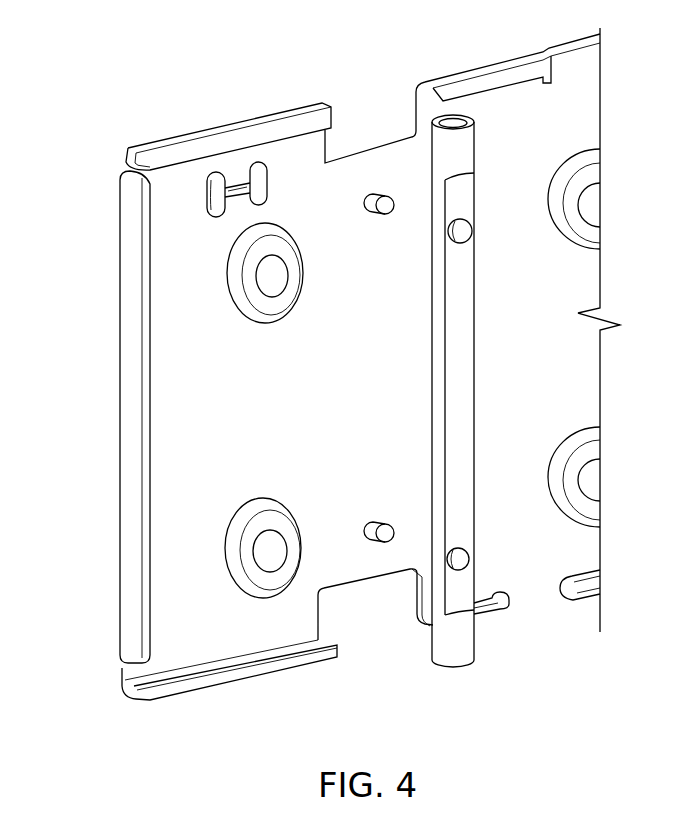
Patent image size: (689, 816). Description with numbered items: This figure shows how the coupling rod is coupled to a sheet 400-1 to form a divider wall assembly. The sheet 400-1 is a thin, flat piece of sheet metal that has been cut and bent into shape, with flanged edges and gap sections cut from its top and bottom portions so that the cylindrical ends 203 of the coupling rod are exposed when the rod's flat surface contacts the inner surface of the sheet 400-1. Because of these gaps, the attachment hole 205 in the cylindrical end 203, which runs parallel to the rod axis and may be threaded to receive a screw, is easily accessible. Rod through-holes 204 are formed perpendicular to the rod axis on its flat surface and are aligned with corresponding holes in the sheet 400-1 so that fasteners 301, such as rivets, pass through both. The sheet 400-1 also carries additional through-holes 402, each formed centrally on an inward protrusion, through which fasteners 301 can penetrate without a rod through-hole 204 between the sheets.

The sheet 400-1 is at (125, 407).
The additional through-hole 402 is at (243, 272).
The fastener 301 is at (377, 194).
The cylindrical end 203 is at (463, 146).
The rod through-hole 204 is at (462, 232).
The attachment hole 205 is at (463, 120).